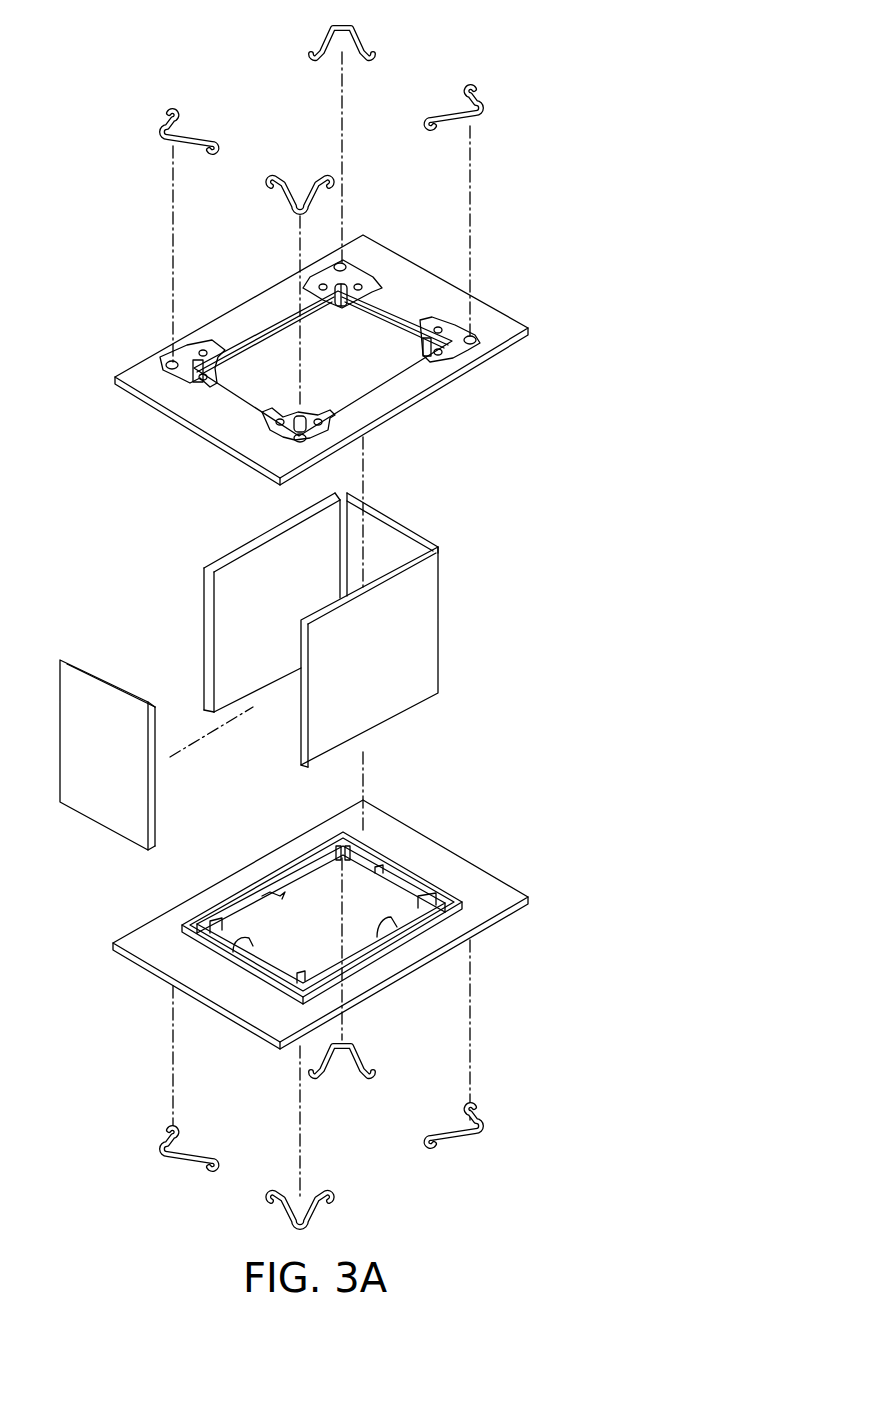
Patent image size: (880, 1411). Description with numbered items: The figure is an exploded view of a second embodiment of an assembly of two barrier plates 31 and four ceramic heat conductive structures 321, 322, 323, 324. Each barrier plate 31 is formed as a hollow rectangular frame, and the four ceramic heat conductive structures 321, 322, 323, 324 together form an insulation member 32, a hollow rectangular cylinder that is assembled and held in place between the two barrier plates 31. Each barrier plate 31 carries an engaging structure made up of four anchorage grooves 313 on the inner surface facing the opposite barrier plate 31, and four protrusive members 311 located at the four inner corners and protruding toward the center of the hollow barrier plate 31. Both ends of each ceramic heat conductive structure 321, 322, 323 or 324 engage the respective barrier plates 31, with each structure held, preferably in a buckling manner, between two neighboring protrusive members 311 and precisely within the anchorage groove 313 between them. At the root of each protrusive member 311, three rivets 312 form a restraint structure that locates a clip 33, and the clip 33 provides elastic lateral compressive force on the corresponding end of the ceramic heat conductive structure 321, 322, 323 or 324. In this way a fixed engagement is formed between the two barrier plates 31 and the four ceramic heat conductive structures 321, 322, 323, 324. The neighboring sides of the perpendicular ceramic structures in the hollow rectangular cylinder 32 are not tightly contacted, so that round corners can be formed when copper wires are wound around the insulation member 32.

The barrier plate 31 is at (341, 362).
The protrusive member 311 is at (313, 405).
The rivet 312 is at (287, 438).
The insulation member 32 is at (249, 671).
The ceramic heat conductive structure 321 is at (393, 523).
The ceramic heat conductive structure 322 is at (225, 568).
The ceramic heat conductive structure 323 is at (325, 653).
The ceramic heat conductive structure 324 is at (95, 707).
The anchorage groove 313 is at (285, 897).
The clip 33 is at (353, 38).